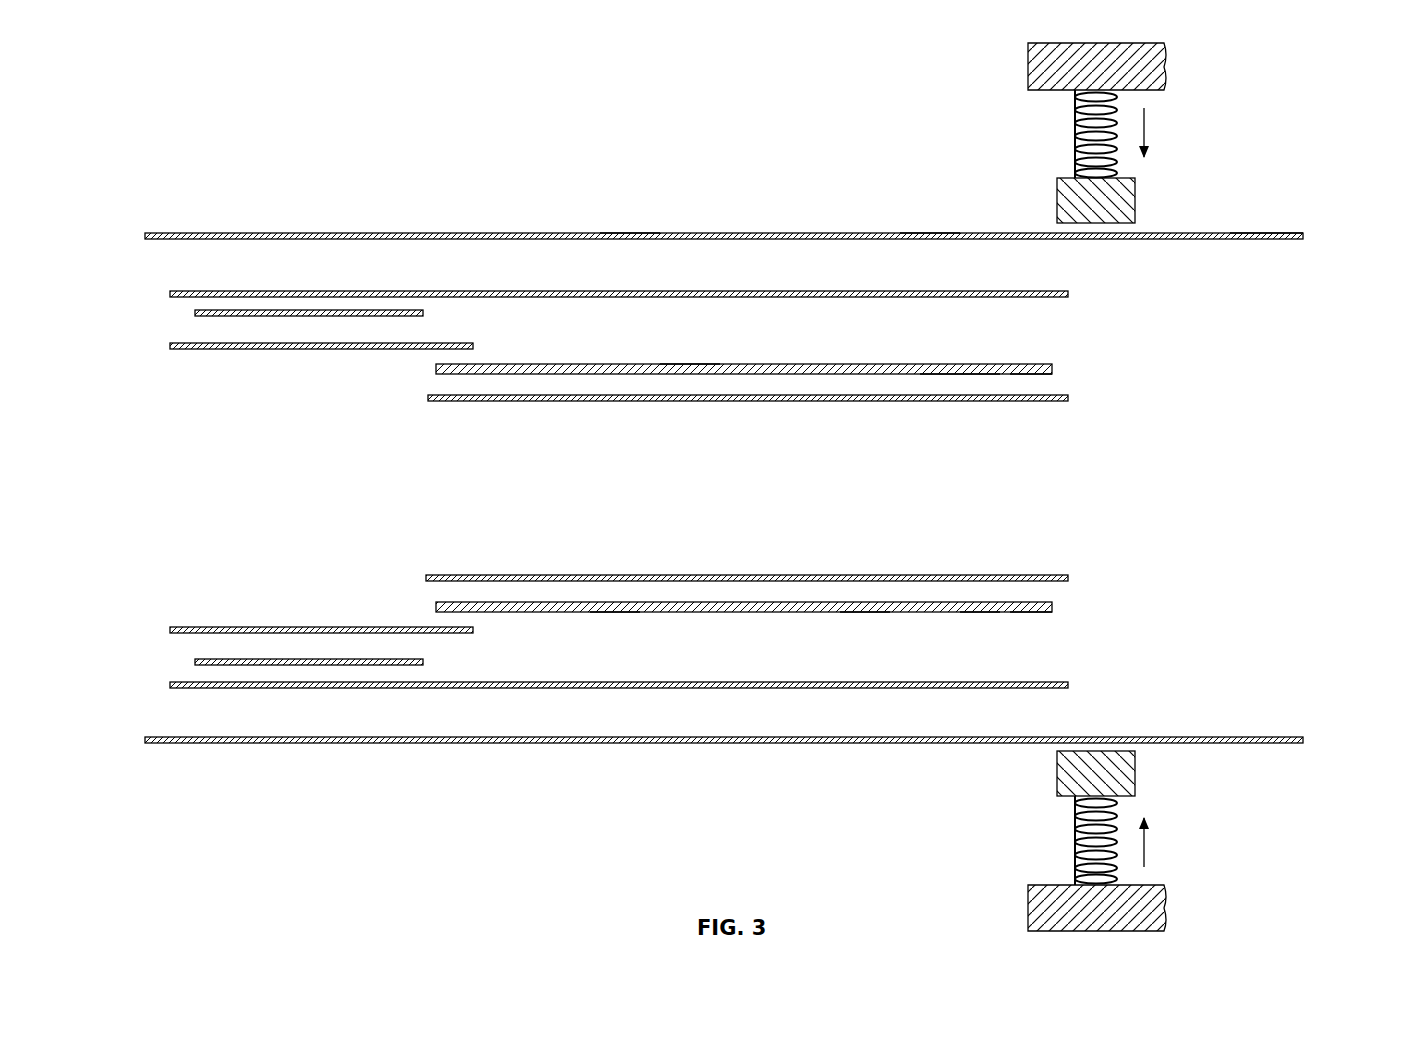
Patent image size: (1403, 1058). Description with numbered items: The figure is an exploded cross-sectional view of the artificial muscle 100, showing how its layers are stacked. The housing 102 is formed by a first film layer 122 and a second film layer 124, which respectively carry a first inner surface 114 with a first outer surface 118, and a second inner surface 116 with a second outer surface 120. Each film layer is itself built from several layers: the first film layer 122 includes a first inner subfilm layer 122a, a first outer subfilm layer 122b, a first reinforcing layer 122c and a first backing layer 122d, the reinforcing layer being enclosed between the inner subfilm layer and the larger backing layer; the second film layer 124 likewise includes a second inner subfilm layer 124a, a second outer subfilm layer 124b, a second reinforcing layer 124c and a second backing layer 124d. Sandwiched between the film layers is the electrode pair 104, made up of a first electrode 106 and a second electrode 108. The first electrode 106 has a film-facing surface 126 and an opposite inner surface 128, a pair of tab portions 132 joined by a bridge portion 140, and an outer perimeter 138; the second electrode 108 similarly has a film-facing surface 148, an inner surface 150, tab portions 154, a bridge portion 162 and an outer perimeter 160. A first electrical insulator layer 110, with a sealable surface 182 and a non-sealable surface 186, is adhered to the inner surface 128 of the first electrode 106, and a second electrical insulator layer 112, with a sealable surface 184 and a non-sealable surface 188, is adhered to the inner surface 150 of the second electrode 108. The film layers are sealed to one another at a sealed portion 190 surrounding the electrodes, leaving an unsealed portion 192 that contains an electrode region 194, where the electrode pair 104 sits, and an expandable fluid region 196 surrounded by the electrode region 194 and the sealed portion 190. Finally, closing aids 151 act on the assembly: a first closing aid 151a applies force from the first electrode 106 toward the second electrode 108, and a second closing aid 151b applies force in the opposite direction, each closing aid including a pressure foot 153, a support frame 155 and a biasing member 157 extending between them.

The artificial muscle 100 is at (330, 66).
The housing 102 is at (932, 207).
The electrode pair 104 is at (1030, 378).
The first electrode 106 is at (861, 616).
The second electrode 108 is at (977, 378).
The first electrical insulator layer 110 is at (830, 572).
The second electrical insulator layer 112 is at (875, 405).
The first inner surface 114 is at (760, 688).
The second inner surface 116 is at (766, 297).
The first outer surface 118 is at (940, 745).
The second outer surface 120 is at (874, 233).
The first film layer 122 is at (654, 757).
The first inner subfilm layer 122a is at (498, 680).
The first outer subfilm layer 122b is at (542, 745).
The first reinforcing layer 122c is at (220, 669).
The first backing layer 122d is at (262, 624).
The second film layer 124 is at (686, 210).
The second inner subfilm layer 124a is at (483, 299).
The second outer subfilm layer 124b is at (550, 232).
The second reinforcing layer 124c is at (276, 308).
The second backing layer 124d is at (287, 352).
The film-facing surface 126 is at (988, 613).
The inner surface 128 is at (1024, 600).
The tab portions 132 is at (617, 616).
The outer perimeter 138 is at (1018, 600).
The bridge portion 140 is at (432, 605).
The film-facing surface 148 is at (800, 364).
The inner surface 150 is at (945, 375).
The closing aid 151 is at (1167, 473).
The first closing aid 151a is at (1190, 846).
The second closing aid 151b is at (1190, 58).
The pressure foot 153 is at (1135, 202).
The tab portions 154 is at (692, 357).
The support frame 155 is at (1050, 43).
The biasing member 157 is at (1074, 128).
The outer perimeter 160 is at (1052, 370).
The bridge portion 162 is at (430, 369).
The sealable surface 182 is at (726, 580).
The sealable surface 184 is at (622, 393).
The non-sealable surface 186 is at (576, 575).
The non-sealable surface 188 is at (521, 402).
The sealed portion 190 is at (1256, 210).
The unsealed portion 192 is at (405, 212).
The electrode region 194 is at (638, 183).
The expandable fluid region 196 is at (304, 766).